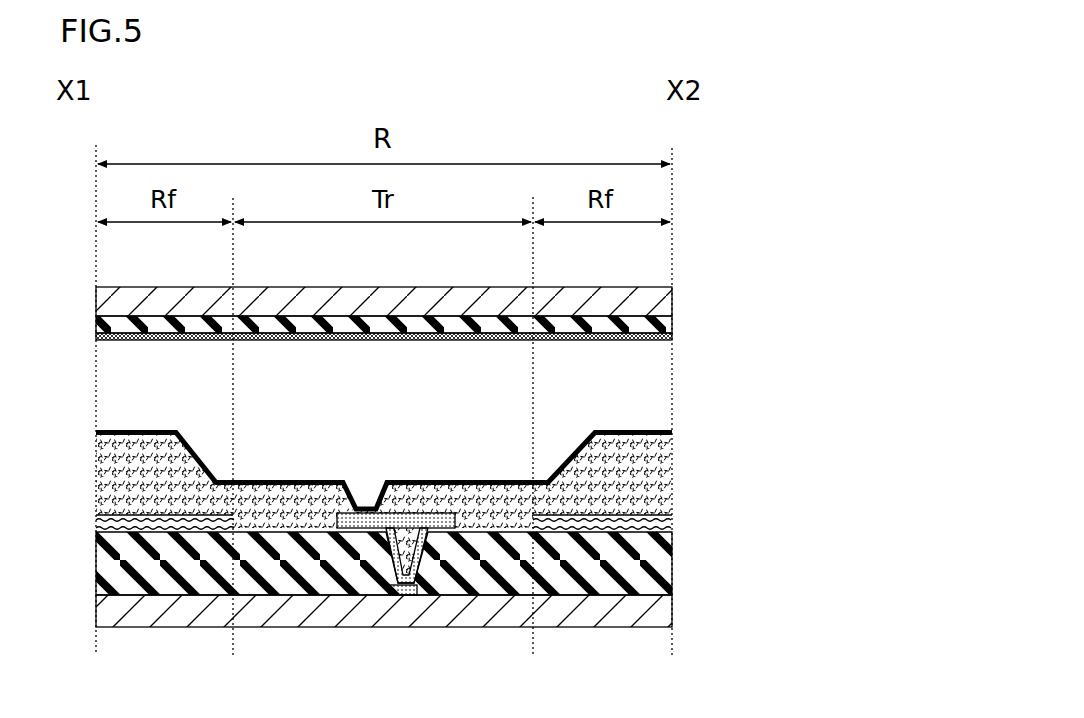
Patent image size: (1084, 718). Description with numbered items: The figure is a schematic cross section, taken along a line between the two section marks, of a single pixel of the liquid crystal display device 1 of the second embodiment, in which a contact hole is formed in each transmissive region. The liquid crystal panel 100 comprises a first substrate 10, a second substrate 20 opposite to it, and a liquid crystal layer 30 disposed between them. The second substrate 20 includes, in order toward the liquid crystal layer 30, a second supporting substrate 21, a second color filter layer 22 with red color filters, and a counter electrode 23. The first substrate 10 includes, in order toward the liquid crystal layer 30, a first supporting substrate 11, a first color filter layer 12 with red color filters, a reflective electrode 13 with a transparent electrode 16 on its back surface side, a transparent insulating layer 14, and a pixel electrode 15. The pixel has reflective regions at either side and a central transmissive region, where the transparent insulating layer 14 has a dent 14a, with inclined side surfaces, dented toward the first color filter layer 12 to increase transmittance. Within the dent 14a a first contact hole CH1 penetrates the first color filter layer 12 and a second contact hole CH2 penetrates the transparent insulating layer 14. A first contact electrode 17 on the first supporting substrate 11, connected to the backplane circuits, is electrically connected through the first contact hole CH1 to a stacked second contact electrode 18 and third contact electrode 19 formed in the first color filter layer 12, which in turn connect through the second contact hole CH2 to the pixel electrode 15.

The liquid crystal display device 1 is at (697, 170).
The first substrate 10 is at (822, 645).
The first supporting substrate 11 is at (672, 610).
The first color filter layer 12 is at (677, 532).
The reflective electrode 13 is at (672, 517).
The transparent insulating layer 14 is at (672, 492).
The dent 14a is at (593, 430).
The pixel electrode 15 is at (672, 433).
The transparent electrode 16 is at (672, 522).
The first contact electrode 17 is at (402, 596).
The second contact electrode 18 is at (416, 578).
The third contact electrode 19 is at (430, 552).
The second substrate 20 is at (818, 248).
The second supporting substrate 21 is at (672, 300).
The second color filter layer 22 is at (672, 325).
The counter electrode 23 is at (672, 336).
The liquid crystal layer 30 is at (672, 401).
The liquid crystal panel 100 is at (873, 293).
The first contact hole CH1 is at (424, 500).
The second contact hole CH2 is at (385, 478).